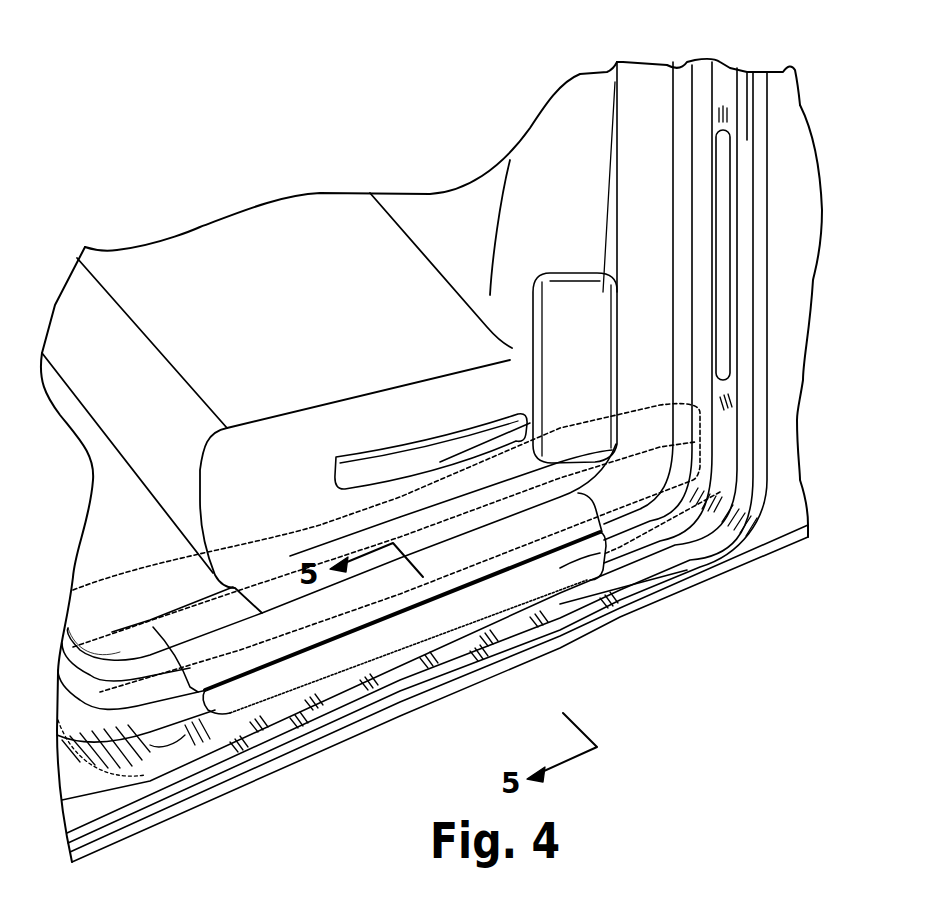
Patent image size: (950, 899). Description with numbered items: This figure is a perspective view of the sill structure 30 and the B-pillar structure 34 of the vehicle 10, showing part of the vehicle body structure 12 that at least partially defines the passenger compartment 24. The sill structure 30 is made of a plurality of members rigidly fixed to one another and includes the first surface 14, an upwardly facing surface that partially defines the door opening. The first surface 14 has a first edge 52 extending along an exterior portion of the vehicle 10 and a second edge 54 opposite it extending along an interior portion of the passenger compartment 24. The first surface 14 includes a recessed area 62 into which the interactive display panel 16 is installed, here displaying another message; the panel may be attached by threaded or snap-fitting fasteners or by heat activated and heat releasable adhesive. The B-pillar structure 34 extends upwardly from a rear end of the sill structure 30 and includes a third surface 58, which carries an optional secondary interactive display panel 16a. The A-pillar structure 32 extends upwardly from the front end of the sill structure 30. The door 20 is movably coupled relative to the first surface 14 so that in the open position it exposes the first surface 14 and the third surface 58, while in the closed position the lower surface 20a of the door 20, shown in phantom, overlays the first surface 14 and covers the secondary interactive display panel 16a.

The vehicle 10 is at (316, 82).
The vehicle body structure 12 is at (608, 168).
The first surface 14 is at (660, 522).
The interactive display panel 16 is at (565, 565).
The secondary interactive display panel 16a is at (723, 300).
The door 20 is at (343, 678).
The lower surface of the door 20a is at (147, 745).
The passenger compartment 24 is at (131, 528).
The sill structure 30 is at (227, 727).
The A-pillar structure 32 is at (72, 747).
The B-pillar structure 34 is at (738, 90).
The first edge 52 is at (413, 657).
The second edge 54 is at (170, 657).
The third surface 58 is at (725, 78).
The recessed area 62 is at (595, 552).